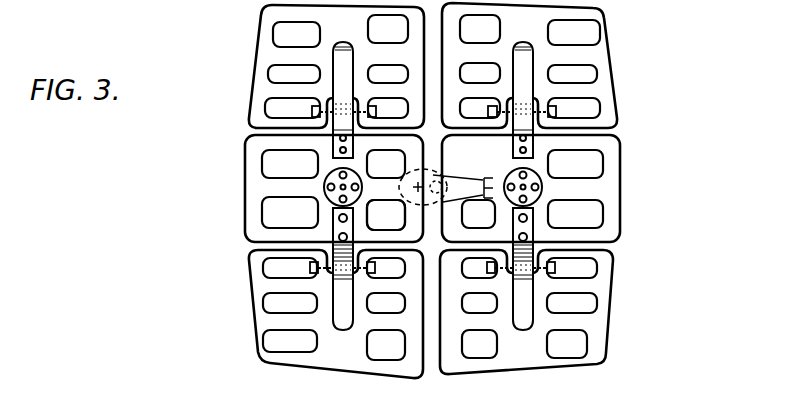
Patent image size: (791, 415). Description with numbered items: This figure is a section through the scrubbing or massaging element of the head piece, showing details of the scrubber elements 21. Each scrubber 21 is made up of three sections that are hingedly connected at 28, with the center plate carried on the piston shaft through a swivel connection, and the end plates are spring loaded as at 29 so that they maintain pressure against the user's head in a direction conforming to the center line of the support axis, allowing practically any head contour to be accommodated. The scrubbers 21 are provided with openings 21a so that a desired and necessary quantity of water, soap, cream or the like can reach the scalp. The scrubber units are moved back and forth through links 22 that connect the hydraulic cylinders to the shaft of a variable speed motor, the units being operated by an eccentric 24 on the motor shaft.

The scrubber element 21 is at (622, 166).
The openings 21a is at (570, 347).
The link 22 is at (447, 163).
The eccentric 24 is at (386, 215).
The hinge connection 28 is at (313, 113).
The spring loading 29 is at (345, 57).